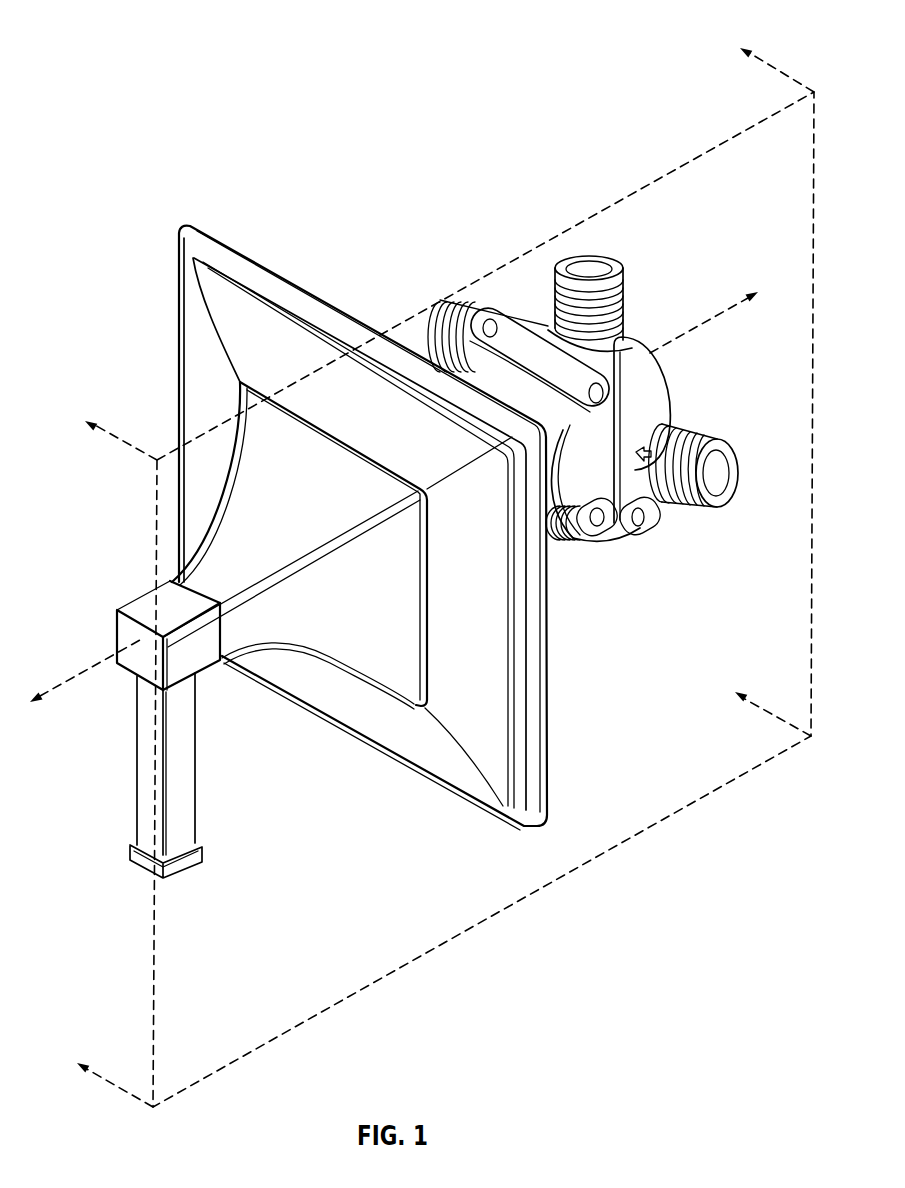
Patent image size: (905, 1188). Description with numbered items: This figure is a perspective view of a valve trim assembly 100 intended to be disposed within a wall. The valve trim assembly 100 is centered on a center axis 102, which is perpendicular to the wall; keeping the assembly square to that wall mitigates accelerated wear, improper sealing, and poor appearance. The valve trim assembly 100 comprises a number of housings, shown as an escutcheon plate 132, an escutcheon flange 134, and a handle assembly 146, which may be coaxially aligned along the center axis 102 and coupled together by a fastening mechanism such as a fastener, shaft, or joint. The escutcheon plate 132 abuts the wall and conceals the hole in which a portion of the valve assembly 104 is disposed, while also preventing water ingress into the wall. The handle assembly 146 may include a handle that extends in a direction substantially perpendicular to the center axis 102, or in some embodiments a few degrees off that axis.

The valve trim assembly 100 is at (162, 152).
The center axis 102 is at (725, 309).
The valve assembly 104 is at (634, 328).
The escutcheon plate 132 is at (183, 262).
The escutcheon flange 134 is at (226, 512).
The handle assembly 146 is at (146, 591).